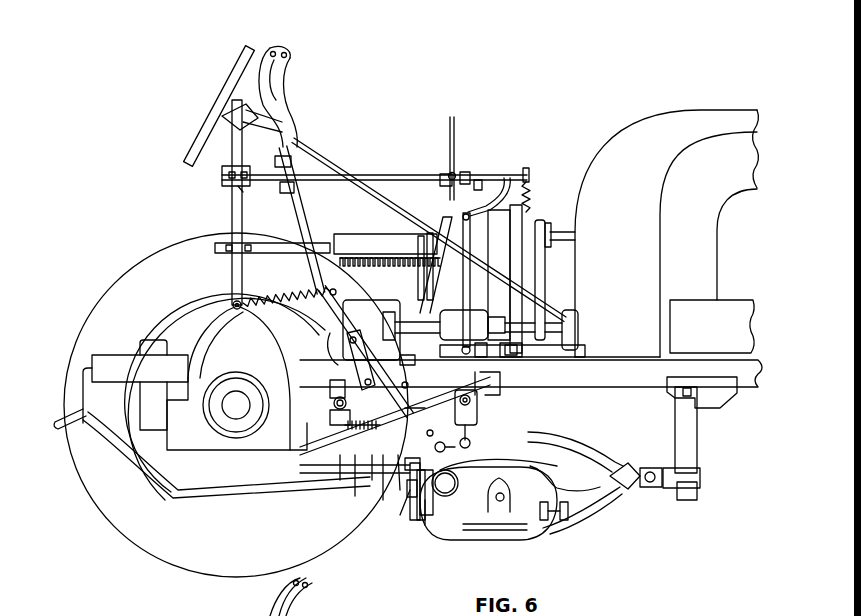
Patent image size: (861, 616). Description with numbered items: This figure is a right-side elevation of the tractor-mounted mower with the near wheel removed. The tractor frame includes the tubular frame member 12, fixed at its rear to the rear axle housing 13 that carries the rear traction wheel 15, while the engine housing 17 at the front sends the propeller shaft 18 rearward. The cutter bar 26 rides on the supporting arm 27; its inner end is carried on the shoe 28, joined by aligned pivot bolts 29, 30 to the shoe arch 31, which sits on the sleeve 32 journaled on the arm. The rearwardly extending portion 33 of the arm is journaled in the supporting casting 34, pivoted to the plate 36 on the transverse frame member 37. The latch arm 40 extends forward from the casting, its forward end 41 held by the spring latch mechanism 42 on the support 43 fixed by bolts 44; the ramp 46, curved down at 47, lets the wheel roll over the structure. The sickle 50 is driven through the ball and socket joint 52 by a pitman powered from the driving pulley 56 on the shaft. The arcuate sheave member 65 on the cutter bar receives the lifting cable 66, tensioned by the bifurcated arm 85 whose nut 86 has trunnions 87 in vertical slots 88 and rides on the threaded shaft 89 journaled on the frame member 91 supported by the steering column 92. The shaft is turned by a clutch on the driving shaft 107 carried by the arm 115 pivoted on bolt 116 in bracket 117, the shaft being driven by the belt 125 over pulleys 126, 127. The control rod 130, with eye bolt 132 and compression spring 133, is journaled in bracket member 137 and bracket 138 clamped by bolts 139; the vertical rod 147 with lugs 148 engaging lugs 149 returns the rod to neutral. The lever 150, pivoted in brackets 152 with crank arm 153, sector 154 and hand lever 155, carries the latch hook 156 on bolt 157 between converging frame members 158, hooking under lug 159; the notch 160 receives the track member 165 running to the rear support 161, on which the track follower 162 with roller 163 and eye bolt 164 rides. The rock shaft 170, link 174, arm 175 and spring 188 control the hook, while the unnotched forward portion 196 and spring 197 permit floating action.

The tubular frame member 12 is at (597, 386).
The rear axle housing 13 is at (203, 312).
The rear traction wheel 15 is at (178, 552).
The engine housing 17 is at (714, 201).
The propeller shaft 18 is at (420, 313).
The cutter bar 26 is at (477, 558).
The supporting arm 27 is at (402, 520).
The shoe 28 is at (572, 530).
The pivot bolt 29 is at (425, 527).
The pivot bolt 30 is at (590, 511).
The shoe arch 31 is at (560, 478).
The sleeve 32 is at (454, 487).
The rearwardly extending portion 33 is at (385, 501).
The supporting casting 34 is at (355, 497).
The plate 36 is at (305, 442).
The transverse frame member 37 is at (305, 422).
The latch arm 40 is at (618, 478).
The forward end of latch arm 41 is at (700, 474).
The spring latch mechanism 42 is at (703, 498).
The support 43 is at (698, 434).
The bolt 44 is at (682, 393).
The ramp or shield 46 is at (547, 442).
The downwardly curved rear end of ramp 47 is at (400, 491).
The reciprocating sickle 50 is at (520, 532).
The ball and socket joint 52 is at (506, 498).
The driving pulley 56 is at (475, 320).
The arcuate sheave member 65 is at (444, 438).
The lifting cable 66 is at (407, 458).
The bifurcated arm 85 is at (428, 280).
The nut 86 is at (410, 257).
The trunnion 87 is at (421, 238).
The vertical slot 88 is at (430, 234).
The threaded shaft 89 is at (357, 252).
The frame member 91 is at (279, 251).
The steering wheel supporting column 92 is at (232, 213).
The driving shaft 107 is at (563, 233).
The arm 115 is at (520, 232).
The bolt 116 is at (521, 358).
The bracket 117 is at (505, 358).
The power transmitting belt 125 is at (546, 270).
The pulley 126 is at (570, 312).
The pulley 127 is at (553, 228).
The control rod 130 is at (383, 174).
The eye bolt 132 is at (528, 172).
The compression spring 133 is at (532, 196).
The bracket member 137 is at (507, 176).
The bracket 138 is at (222, 176).
The clamping bolt 139 is at (243, 186).
The vertical rod 147 is at (456, 152).
The lug 148 is at (441, 176).
The lug 149 is at (447, 170).
The manually controlled lever 150 is at (312, 192).
The bracket 152 is at (335, 381).
The crank arm 153 is at (440, 395).
The sector 154 is at (333, 368).
The hand lever 155 is at (262, 90).
The latch hook 156 is at (432, 376).
The bolt 157 is at (398, 313).
The converging frame member 158 is at (368, 333).
The projecting lug 159 is at (428, 406).
The notch 160 is at (505, 398).
The rear support 161 is at (80, 409).
The track follower 162 is at (478, 413).
The roller 163 is at (484, 397).
The eye bolt 164 is at (470, 442).
The track member 165 is at (292, 505).
The rock shaft 170 is at (348, 392).
The link 174 is at (340, 481).
The arm 175 is at (333, 404).
The spring 188 is at (372, 481).
The forward portion of sector 196 is at (428, 355).
The spring 197 is at (279, 304).